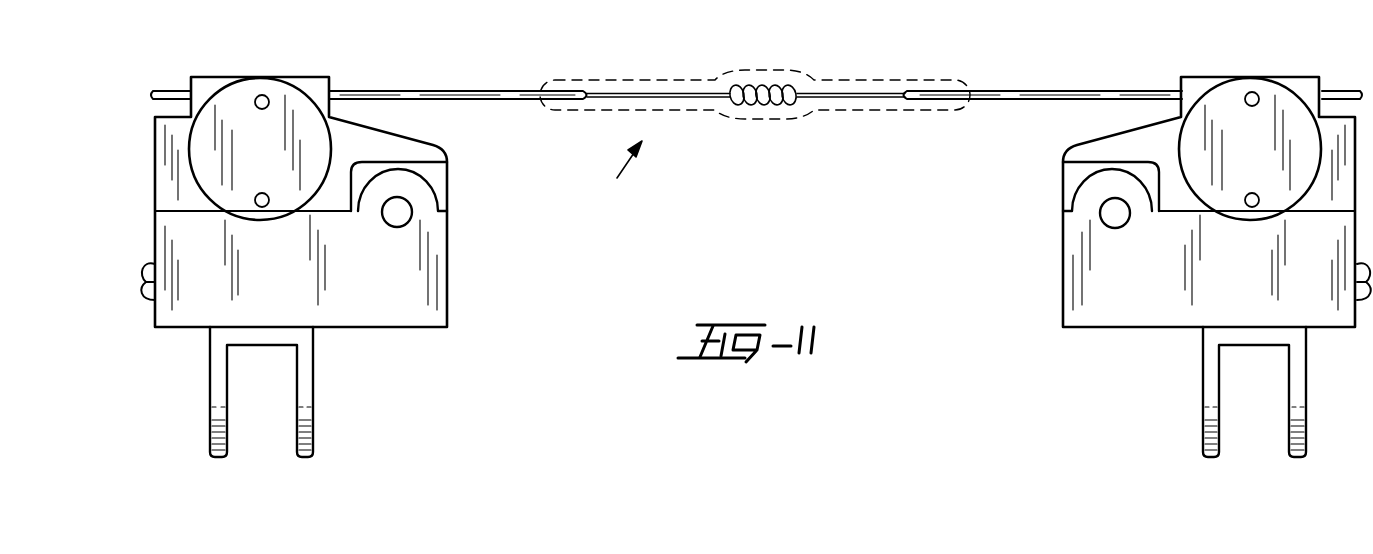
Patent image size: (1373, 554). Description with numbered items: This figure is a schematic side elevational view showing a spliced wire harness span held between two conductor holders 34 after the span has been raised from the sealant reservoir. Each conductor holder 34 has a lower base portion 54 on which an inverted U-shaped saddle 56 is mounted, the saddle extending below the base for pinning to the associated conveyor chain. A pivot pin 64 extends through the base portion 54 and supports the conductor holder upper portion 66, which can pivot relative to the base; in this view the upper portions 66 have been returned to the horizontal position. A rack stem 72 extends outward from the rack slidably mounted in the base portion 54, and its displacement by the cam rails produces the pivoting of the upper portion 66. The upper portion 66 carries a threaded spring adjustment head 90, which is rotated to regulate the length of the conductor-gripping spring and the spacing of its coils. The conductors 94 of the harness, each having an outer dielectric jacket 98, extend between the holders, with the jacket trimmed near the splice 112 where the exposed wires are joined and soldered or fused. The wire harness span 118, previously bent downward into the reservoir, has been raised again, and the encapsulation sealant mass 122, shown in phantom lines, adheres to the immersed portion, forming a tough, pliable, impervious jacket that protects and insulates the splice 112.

The conductor holder 34 is at (484, 275).
The lower base portion 54 is at (389, 284).
The inverted U-shaped saddle 56 is at (315, 404).
The pivot pin 64 is at (412, 215).
The conductor holder upper portion 66 is at (155, 186).
The rack stem 72 is at (146, 302).
The threaded spring adjustment head 90 is at (279, 161).
The conductors 94 is at (374, 86).
The outer dielectric jacket 98 is at (533, 48).
The splice 112 is at (770, 106).
The wire harness span 118 is at (618, 173).
The sealant mass 122 is at (822, 83).